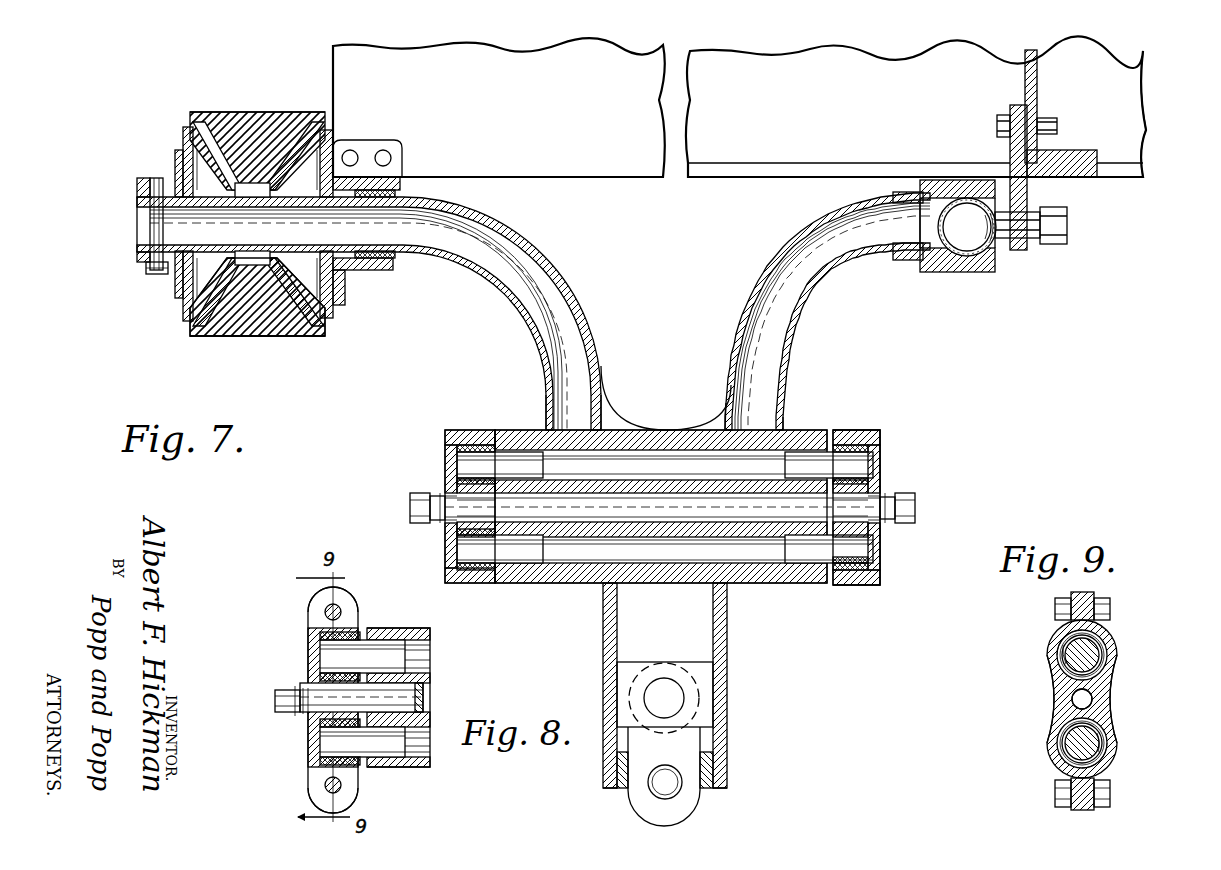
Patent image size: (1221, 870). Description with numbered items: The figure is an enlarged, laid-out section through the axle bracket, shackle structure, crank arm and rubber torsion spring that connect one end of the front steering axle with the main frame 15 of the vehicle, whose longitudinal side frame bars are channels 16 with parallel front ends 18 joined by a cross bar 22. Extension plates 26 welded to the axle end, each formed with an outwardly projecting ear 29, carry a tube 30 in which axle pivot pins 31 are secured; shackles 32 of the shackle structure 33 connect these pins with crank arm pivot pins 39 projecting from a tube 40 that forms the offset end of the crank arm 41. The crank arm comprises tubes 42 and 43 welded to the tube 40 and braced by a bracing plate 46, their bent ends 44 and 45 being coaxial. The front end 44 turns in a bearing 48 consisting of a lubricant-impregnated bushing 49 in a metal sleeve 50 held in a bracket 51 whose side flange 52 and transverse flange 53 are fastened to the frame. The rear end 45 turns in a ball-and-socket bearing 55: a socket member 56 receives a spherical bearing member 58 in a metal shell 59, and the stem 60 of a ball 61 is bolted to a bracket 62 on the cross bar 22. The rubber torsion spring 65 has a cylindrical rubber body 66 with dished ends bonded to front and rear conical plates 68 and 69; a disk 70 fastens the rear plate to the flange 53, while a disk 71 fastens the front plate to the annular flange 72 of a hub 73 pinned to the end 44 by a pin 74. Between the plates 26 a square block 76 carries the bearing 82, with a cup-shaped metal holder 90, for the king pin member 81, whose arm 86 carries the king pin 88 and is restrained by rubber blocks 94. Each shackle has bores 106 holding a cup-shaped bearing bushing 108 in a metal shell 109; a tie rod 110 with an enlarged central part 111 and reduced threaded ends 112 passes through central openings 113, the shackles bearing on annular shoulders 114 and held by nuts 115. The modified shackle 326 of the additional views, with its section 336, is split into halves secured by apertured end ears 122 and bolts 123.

In FIG. 7, the main frame 15 is at (735, 162).
In FIG. 7, the longitudinal side frame bars 16 is at (1150, 60).
In FIG. 7, the front ends of side frame bars 18 is at (739, 106).
In FIG. 7, the cross bar 22 is at (1038, 72).
In FIG. 7, the plates 26 is at (603, 633).
In FIG. 7, the ear 29 is at (604, 760).
In FIG. 7, the tube 30 is at (660, 584).
In FIG. 8, the tube 30 is at (425, 762).
In FIG. 7, the axle pivot pins 31 is at (545, 566).
In FIG. 8, the axle pivot pins 31 is at (420, 742).
In FIG. 9, the axle pivot pins 31 is at (1110, 745).
In FIG. 7, the shackles 32 is at (455, 429).
In FIG. 7, the shackle structure 33 is at (880, 430).
In FIG. 7, the crank arm pivot pins 39 is at (523, 452).
In FIG. 8, the crank arm pivot pins 39 is at (410, 660).
In FIG. 9, the crank arm pivot pins 39 is at (1110, 658).
In FIG. 7, the tube 40 is at (656, 428).
In FIG. 8, the tube 40 is at (410, 634).
In FIG. 7, the crank arm 41 is at (802, 334).
In FIG. 7, the front tubular arm 42 is at (592, 322).
In FIG. 7, the rear tubular arm 43 is at (749, 298).
In FIG. 7, the front end of crank arm 44 is at (140, 228).
In FIG. 7, the rear end of crank arm 45 is at (832, 222).
In FIG. 7, the bracing plate 46 is at (708, 412).
In FIG. 7, the bearing 48 is at (386, 278).
In FIG. 7, the bushing 49 is at (400, 196).
In FIG. 7, the metal sleeve 50 is at (394, 260).
In FIG. 7, the bracket 51 is at (396, 140).
In FIG. 7, the side flange 52 is at (402, 158).
In FIG. 7, the transverse flange 53 is at (333, 160).
In FIG. 7, the ball-and-socket bearing 55 is at (958, 178).
In FIG. 7, the socket member 56 is at (938, 273).
In FIG. 7, the spherical bearing member 58 is at (967, 227).
In FIG. 7, the spherical metal shell 59 is at (998, 258).
In FIG. 7, the stem 60 is at (1070, 228).
In FIG. 7, the ball 61 is at (972, 231).
In FIG. 7, the bracket 62 is at (1036, 254).
In FIG. 7, the rubber torsion spring 65 is at (263, 100).
In FIG. 7, the rubber body 66 is at (240, 112).
In FIG. 7, the front conical plate 68 is at (192, 112).
In FIG. 7, the rear conical plate 69 is at (332, 150).
In FIG. 7, the disk 70 is at (330, 322).
In FIG. 7, the disk 71 is at (180, 138).
In FIG. 7, the annular flange 72 is at (177, 158).
In FIG. 7, the hub 73 is at (146, 264).
In FIG. 7, the pin 74 is at (152, 184).
In FIG. 7, the square block 76 is at (714, 675).
In FIG. 7, the king pin member 81 is at (664, 776).
In FIG. 7, the bearing 82 is at (683, 697).
In FIG. 7, the arm 86 is at (670, 771).
In FIG. 7, the king pin 88 is at (668, 792).
In FIG. 7, the cup-shaped metal holder 90 is at (645, 696).
In FIG. 7, the rubber blocks 94 is at (620, 788).
In FIG. 7, the bores 106 is at (448, 442).
In FIG. 8, the bores 106 is at (308, 632).
In FIG. 9, the bores 106 is at (1050, 657).
In FIG. 7, the cup-shaped bearing bushing 108 is at (452, 461).
In FIG. 8, the cup-shaped bearing bushing 108 is at (358, 632).
In FIG. 9, the cup-shaped bearing bushing 108 is at (1060, 652).
In FIG. 7, the cup-shaped metal shell 109 is at (876, 462).
In FIG. 8, the cup-shaped metal shell 109 is at (310, 748).
In FIG. 9, the cup-shaped metal shell 109 is at (1105, 647).
In FIG. 7, the tie rod 110 is at (410, 506).
In FIG. 8, the tie rod 110 is at (425, 692).
In FIG. 9, the tie rod 110 is at (1090, 701).
In FIG. 7, the enlarged central part 111 is at (662, 505).
In FIG. 8, the enlarged central part 111 is at (425, 705).
In FIG. 7, the reduced threaded ends 112 is at (410, 516).
In FIG. 8, the reduced threaded ends 112 is at (275, 702).
In FIG. 9, the reduced threaded ends 112 is at (1068, 706).
In FIG. 7, the central openings 113 is at (440, 505).
In FIG. 7, the annular shoulders 114 is at (494, 510).
In FIG. 8, the annular shoulders 114 is at (305, 688).
In FIG. 7, the nuts 115 is at (432, 503).
In FIG. 8, the nuts 115 is at (290, 690).
In FIG. 8, the apertured end ears 122 is at (318, 600).
In FIG. 9, the apertured end ears 122 is at (1085, 595).
In FIG. 8, the bolts 123 is at (322, 790).
In FIG. 9, the bolts 123 is at (1100, 608).
In FIG. 8, the end plate 326 is at (308, 606).
In FIG. 9, the end plate 326 is at (1055, 697).
In FIG. 8, the end plate head 336 is at (355, 595).
In FIG. 9, the end plate head 336 is at (1112, 690).